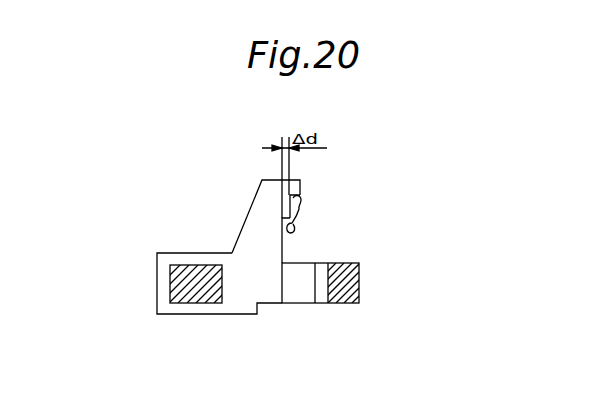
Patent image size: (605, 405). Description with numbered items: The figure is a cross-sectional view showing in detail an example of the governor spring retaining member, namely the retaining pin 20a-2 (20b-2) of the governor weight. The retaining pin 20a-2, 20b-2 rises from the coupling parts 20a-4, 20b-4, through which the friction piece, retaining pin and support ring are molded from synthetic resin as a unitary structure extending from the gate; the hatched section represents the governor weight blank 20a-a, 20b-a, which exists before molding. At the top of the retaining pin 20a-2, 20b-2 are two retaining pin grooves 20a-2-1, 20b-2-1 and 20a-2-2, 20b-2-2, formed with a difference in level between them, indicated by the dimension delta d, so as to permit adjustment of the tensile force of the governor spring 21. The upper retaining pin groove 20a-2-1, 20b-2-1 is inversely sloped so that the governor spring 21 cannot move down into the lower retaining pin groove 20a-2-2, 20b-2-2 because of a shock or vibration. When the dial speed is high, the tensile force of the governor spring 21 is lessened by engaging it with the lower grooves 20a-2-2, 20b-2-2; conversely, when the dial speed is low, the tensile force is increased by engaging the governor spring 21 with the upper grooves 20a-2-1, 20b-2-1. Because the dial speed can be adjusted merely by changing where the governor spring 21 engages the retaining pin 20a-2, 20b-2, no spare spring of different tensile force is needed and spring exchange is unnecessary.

The retaining pin 20a-2 is at (193, 197).
The retaining pin 20b-2 is at (258, 213).
The retaining pin groove 20a-2-1 is at (405, 211).
The retaining pin groove 20b-2-1 is at (300, 211).
The retaining pin groove 20a-2-2 is at (410, 240).
The retaining pin groove 20b-2-2 is at (288, 246).
The coupling part 20a-4 is at (150, 262).
The coupling part 20b-4 is at (165, 258).
The governor weight blank 20a-a is at (224, 313).
The governor weight blank 20b-a is at (175, 297).
The governor spring 21 is at (300, 201).